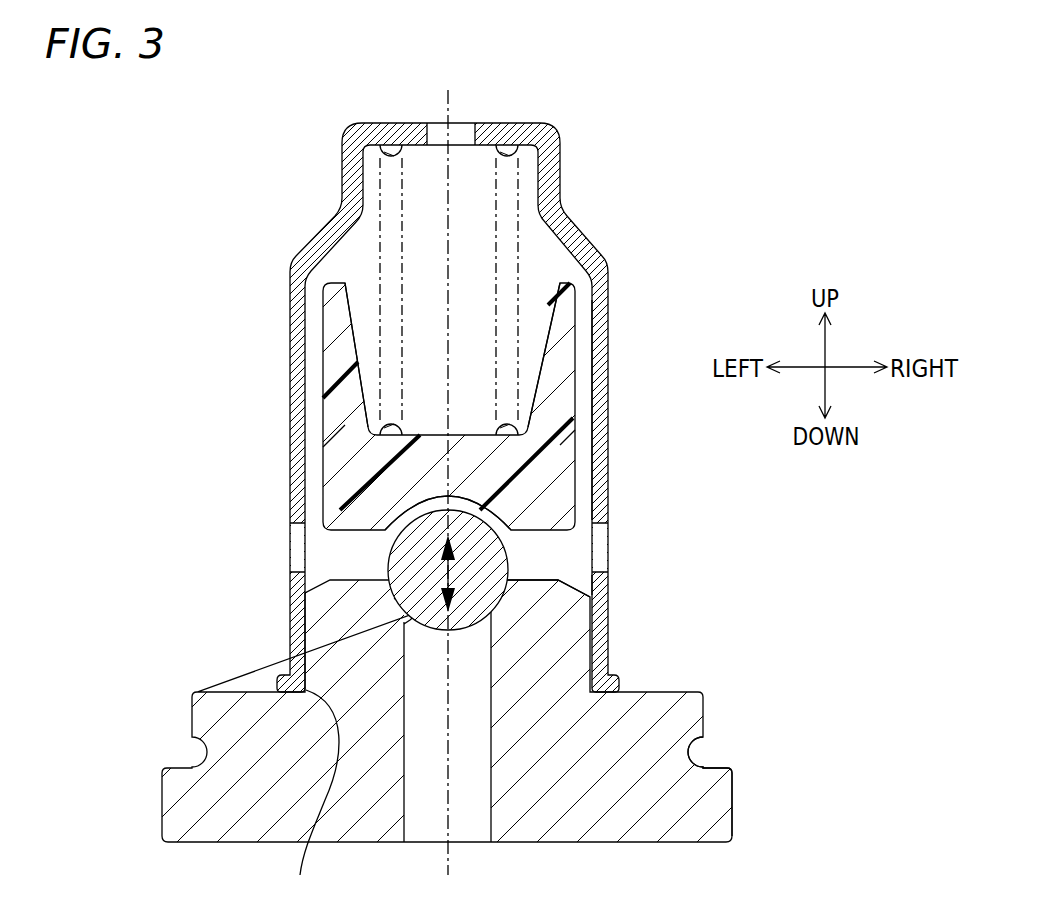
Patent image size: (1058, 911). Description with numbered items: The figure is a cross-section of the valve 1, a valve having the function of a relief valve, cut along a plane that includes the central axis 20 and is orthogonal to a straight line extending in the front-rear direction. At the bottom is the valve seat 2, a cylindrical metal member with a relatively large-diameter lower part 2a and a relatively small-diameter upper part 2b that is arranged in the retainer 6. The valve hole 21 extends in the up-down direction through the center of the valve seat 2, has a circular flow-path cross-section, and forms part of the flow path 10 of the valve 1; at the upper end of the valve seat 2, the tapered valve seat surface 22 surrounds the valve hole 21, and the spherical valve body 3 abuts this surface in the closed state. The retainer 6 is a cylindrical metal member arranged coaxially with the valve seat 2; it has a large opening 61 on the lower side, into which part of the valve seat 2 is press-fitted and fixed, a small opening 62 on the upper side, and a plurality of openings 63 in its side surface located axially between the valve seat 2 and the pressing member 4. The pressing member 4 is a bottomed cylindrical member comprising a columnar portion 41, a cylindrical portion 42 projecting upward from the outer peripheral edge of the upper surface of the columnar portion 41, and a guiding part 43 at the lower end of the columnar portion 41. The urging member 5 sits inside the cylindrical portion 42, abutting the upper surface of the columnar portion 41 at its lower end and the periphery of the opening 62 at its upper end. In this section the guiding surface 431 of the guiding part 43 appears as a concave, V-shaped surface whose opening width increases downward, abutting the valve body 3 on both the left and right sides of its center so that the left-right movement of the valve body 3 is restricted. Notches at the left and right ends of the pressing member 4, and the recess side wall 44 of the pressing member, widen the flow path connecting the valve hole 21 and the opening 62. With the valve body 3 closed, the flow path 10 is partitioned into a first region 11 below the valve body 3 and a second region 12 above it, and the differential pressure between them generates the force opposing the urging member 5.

The valve 1 is at (140, 146).
The valve seat 2 is at (222, 732).
The lower part 2a is at (643, 770).
The upper part 2b is at (537, 677).
The valve body 3 is at (483, 608).
The pressing member 4 is at (573, 368).
The columnar portion 41 is at (335, 456).
The cylindrical portion 42 is at (340, 380).
The guiding part 43 is at (330, 503).
The guiding surface 431 is at (387, 547).
The recess side wall 44 is at (323, 323).
The urging member 5 is at (383, 173).
The retainer 6 is at (562, 185).
The opening 61 is at (308, 795).
The opening 62 is at (462, 130).
The openings 63 is at (290, 558).
The flow path 10 is at (574, 545).
The first region 11 is at (477, 760).
The second region 12 is at (567, 560).
The central axis 20 is at (458, 866).
The valve hole 21 is at (424, 822).
The valve seat surface 22 is at (400, 628).